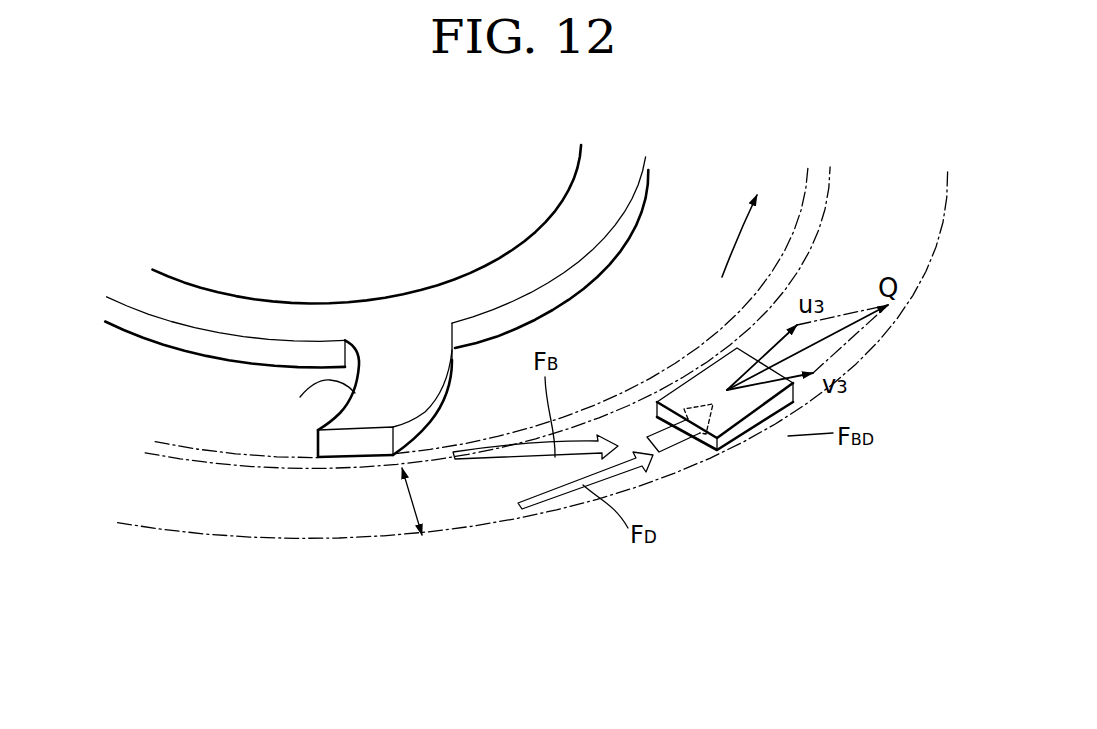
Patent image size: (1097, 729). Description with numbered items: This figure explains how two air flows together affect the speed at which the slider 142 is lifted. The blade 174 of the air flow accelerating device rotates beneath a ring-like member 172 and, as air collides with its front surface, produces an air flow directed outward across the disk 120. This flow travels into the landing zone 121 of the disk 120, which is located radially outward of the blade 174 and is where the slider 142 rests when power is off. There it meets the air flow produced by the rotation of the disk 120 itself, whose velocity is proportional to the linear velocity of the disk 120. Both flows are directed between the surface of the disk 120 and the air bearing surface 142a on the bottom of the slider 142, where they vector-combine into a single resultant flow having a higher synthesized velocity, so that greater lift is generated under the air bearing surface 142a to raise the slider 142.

The rotating ring 172 is at (225, 307).
The blade 174 is at (300, 397).
The disk 120 is at (460, 503).
The landing zone 121 is at (412, 510).
The slider 142 is at (712, 395).
The air bearing surface 142a is at (703, 445).